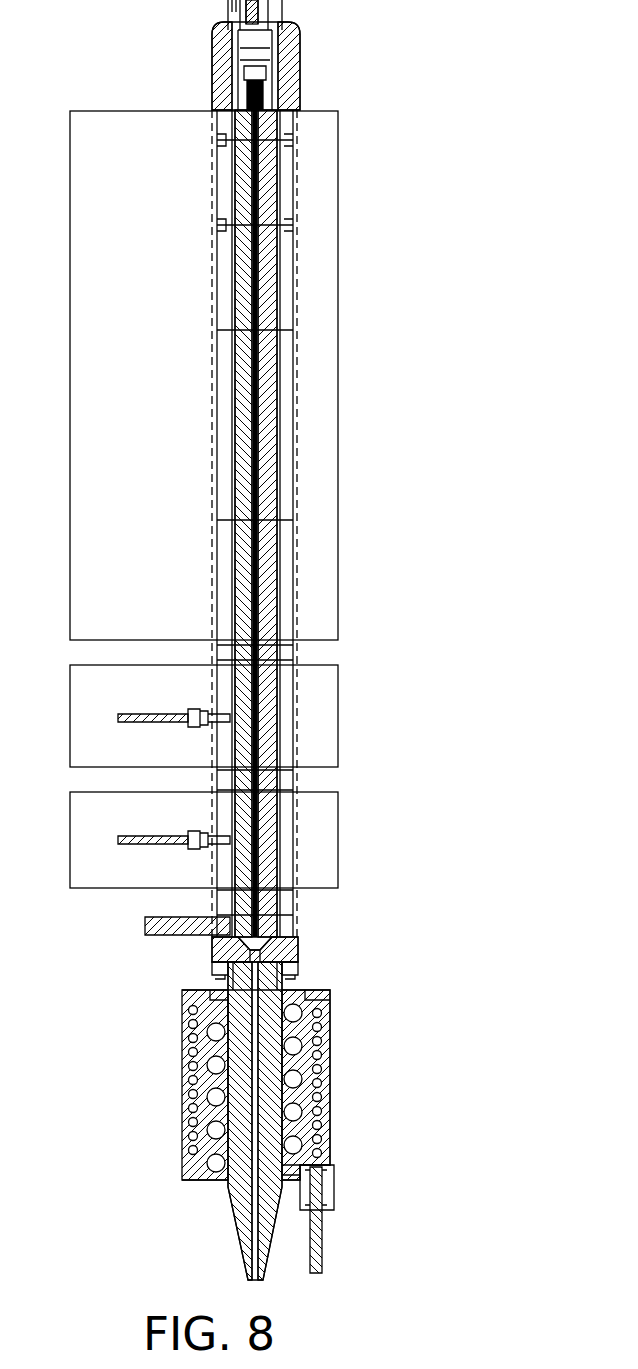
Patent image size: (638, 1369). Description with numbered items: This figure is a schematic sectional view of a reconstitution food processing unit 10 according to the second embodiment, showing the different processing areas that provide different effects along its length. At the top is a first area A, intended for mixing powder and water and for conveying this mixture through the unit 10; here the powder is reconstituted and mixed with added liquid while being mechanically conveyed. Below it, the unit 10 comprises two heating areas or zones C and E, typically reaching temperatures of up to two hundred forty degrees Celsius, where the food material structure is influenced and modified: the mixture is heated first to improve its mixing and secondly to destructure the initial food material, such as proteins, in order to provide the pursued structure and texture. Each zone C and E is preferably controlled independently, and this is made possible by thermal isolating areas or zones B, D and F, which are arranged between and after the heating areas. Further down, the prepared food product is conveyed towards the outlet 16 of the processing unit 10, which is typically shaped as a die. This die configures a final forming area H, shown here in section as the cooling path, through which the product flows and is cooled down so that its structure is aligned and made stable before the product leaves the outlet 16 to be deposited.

The first area A is at (70, 375).
The thermal isolating area B is at (212, 652).
The heating area C is at (70, 721).
The thermal isolating area D is at (212, 779).
The heating area E is at (70, 841).
The thermal isolating area F is at (214, 900).
The final forming area H is at (182, 1086).
The processing unit 10 is at (395, 385).
The outlet 16 is at (240, 1252).